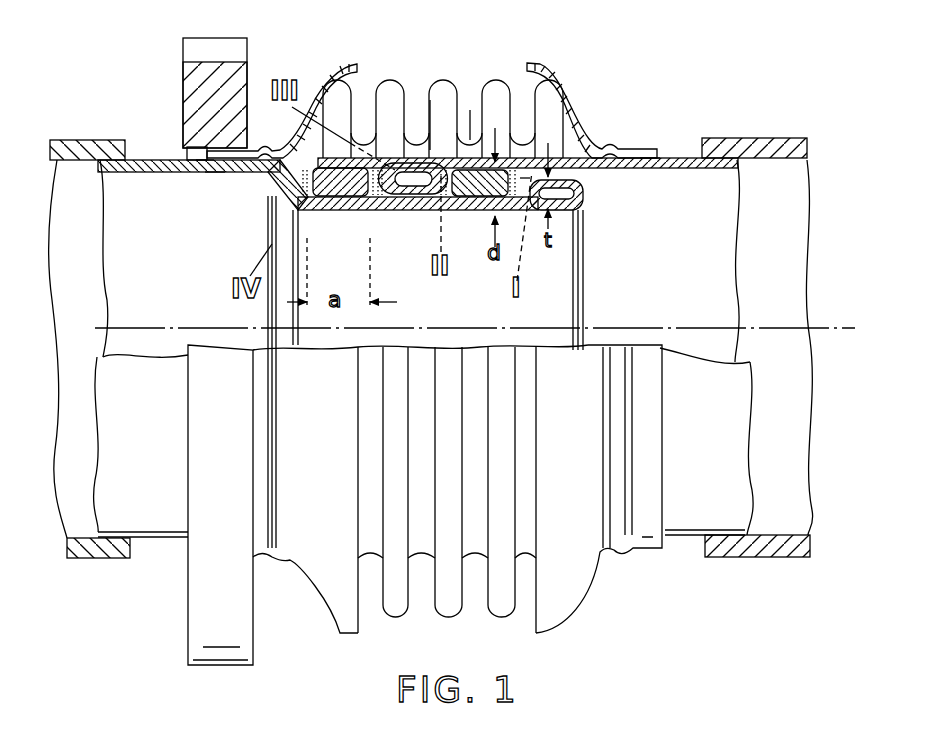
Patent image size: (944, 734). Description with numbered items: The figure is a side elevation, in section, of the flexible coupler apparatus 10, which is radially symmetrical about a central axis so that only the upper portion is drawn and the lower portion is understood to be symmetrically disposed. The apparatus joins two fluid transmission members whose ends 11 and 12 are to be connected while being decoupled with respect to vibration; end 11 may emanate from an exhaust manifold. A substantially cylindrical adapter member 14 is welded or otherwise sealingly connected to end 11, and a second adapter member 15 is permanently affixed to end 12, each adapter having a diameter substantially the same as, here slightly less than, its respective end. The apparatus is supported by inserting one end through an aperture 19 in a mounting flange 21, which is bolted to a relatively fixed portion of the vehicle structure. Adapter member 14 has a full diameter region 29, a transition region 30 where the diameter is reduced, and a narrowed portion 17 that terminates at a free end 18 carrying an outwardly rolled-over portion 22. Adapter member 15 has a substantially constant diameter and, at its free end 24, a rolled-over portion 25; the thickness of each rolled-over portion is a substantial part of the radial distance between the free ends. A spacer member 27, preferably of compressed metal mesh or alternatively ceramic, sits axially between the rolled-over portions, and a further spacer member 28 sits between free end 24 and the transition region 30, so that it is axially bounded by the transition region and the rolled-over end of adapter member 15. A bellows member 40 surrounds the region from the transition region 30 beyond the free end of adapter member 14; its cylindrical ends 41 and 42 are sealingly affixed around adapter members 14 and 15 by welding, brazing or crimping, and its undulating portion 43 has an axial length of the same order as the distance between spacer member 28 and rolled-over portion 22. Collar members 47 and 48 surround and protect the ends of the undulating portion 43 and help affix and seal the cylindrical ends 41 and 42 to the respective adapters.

The flexible coupler apparatus 10 is at (152, 77).
The fluid transmission member end 11 is at (98, 147).
The fluid transmission member end 12 is at (728, 143).
The adapter member 14 is at (151, 168).
The adapter member 15 is at (684, 164).
The narrowed portion 17 is at (337, 211).
The free end 18 is at (563, 214).
The aperture 19 is at (185, 153).
The mounting flange 21 is at (236, 86).
The rolled-over portion 22 is at (586, 186).
The free end 24 is at (368, 130).
The rolled-over portion 25 is at (408, 188).
The spacer member 27 is at (468, 197).
The spacer member 28 is at (338, 194).
The full diameter region 29 is at (213, 178).
The transition region 30 is at (283, 197).
The bellows member 40 is at (441, 84).
The cylindrical end 41 is at (204, 164).
The cylindrical end 42 is at (656, 165).
The undulating portion 43 is at (484, 78).
The collar member 47 is at (300, 92).
The collar member 48 is at (565, 90).